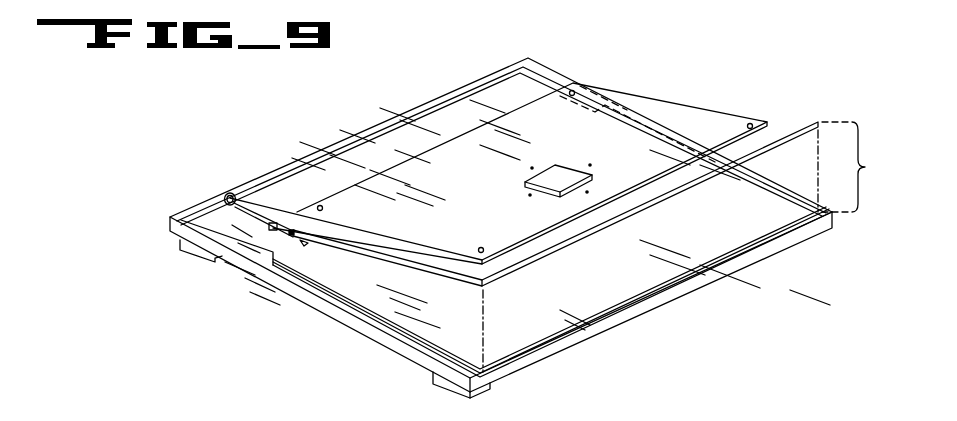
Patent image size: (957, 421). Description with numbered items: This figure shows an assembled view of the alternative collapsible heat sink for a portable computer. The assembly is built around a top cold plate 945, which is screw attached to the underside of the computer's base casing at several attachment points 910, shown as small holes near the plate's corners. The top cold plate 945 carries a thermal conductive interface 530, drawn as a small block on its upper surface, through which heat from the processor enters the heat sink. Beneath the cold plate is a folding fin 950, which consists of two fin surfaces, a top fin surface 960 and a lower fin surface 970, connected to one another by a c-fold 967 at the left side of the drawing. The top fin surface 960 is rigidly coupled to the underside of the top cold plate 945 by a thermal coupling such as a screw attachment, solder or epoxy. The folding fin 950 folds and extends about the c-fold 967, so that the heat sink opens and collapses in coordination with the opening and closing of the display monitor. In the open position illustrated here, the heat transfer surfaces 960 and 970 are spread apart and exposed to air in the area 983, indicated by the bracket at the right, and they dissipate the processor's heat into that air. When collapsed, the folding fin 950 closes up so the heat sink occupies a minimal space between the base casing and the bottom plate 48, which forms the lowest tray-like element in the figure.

The bottom plate 48 is at (658, 300).
The fin surface 970 is at (661, 275).
The c-fold 967 is at (226, 193).
The top fin surface 960 is at (640, 210).
The top cold plate 945 is at (480, 173).
The attachment points 910 is at (572, 90).
The folding fin 950 is at (625, 86).
The thermal conductive interface 530 is at (554, 185).
The area 983 is at (697, 247).